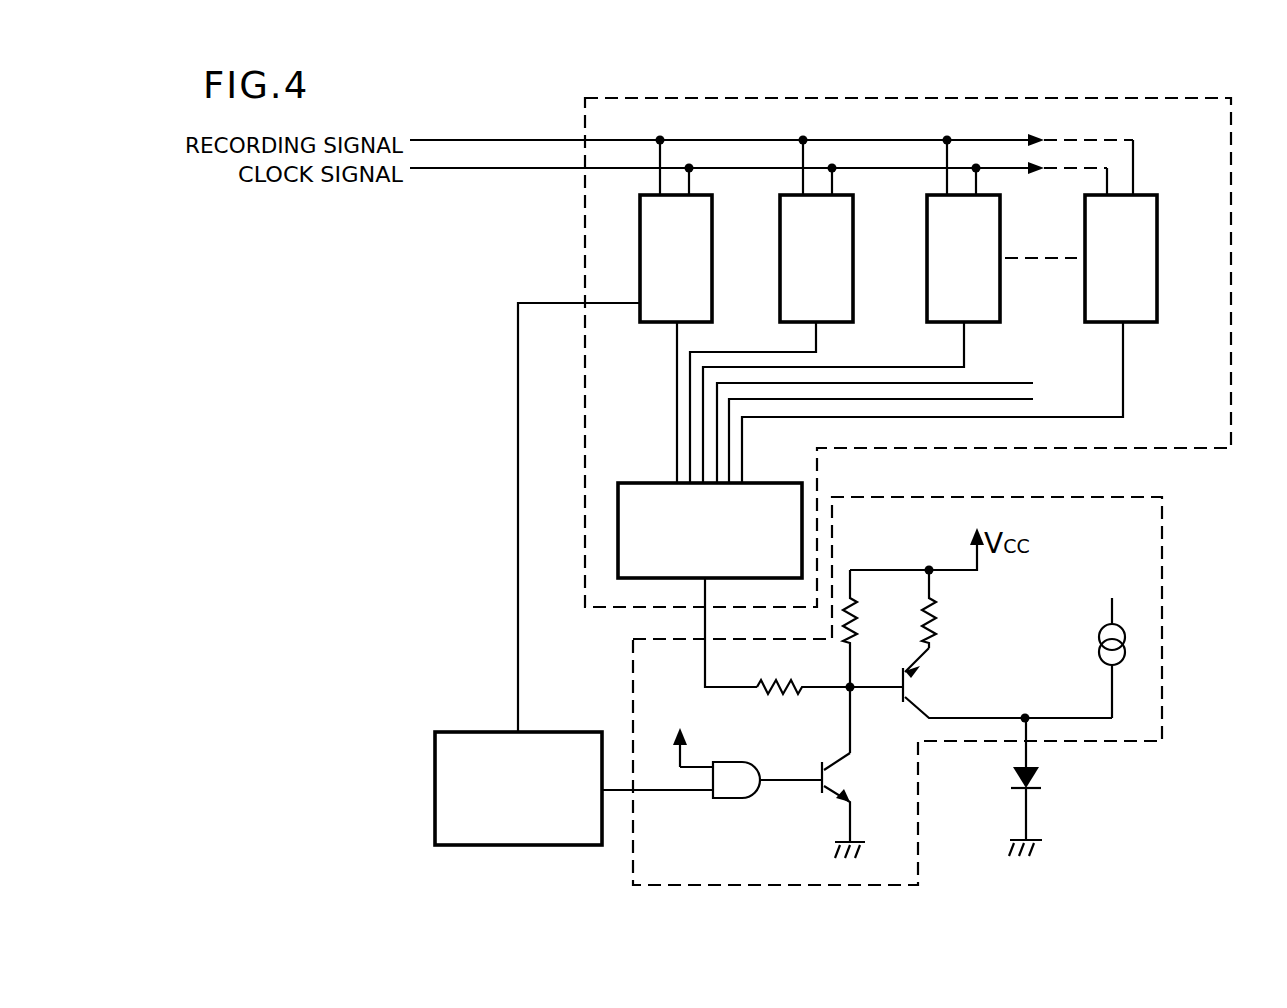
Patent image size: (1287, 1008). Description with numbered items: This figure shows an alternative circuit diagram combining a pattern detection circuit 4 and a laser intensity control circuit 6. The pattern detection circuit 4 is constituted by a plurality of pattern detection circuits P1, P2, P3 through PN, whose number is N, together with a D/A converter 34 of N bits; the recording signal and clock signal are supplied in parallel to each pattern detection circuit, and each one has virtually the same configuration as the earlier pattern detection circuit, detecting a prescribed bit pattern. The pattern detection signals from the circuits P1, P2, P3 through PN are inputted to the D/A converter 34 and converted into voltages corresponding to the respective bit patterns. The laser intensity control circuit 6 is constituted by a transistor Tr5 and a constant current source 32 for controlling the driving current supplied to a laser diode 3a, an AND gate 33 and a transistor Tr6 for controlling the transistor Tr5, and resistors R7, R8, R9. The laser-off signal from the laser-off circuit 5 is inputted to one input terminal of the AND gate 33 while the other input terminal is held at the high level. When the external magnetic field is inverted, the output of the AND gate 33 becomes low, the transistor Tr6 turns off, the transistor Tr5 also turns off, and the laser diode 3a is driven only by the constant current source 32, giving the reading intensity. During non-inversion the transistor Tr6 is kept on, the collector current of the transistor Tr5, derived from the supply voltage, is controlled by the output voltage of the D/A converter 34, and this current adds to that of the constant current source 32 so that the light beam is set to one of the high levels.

The pattern detection circuit 4 is at (972, 97).
The laser intensity control circuit 6 is at (1092, 496).
The D/A converter 34 is at (757, 483).
The AND gate 33 is at (735, 762).
The laser-off circuit 5 is at (538, 845).
The constant current source 32 is at (1125, 648).
The laser diode 3a is at (1040, 775).
The pattern detection circuit P1 is at (712, 248).
The pattern detection circuit P2 is at (853, 248).
The pattern detection circuit P3 is at (1000, 248).
The pattern detection circuit PN is at (1157, 248).
The resistor R7 is at (830, 670).
The resistor R8 is at (869, 661).
The resistor R9 is at (948, 609).
The transistor Tr5 is at (1007, 683).
The transistor Tr6 is at (850, 805).